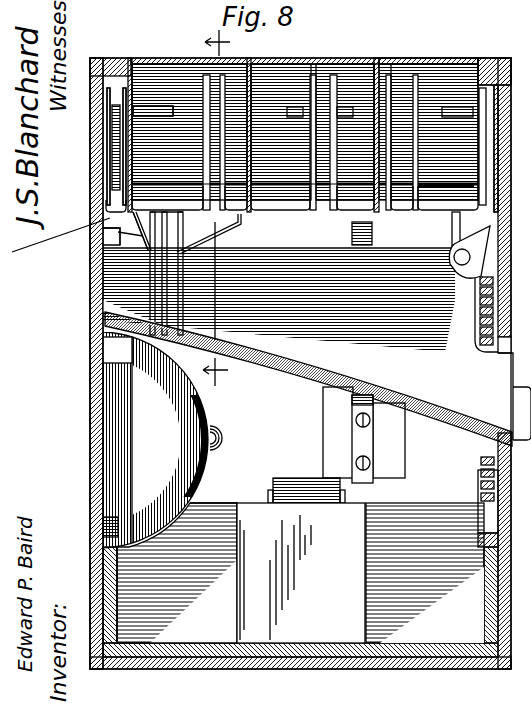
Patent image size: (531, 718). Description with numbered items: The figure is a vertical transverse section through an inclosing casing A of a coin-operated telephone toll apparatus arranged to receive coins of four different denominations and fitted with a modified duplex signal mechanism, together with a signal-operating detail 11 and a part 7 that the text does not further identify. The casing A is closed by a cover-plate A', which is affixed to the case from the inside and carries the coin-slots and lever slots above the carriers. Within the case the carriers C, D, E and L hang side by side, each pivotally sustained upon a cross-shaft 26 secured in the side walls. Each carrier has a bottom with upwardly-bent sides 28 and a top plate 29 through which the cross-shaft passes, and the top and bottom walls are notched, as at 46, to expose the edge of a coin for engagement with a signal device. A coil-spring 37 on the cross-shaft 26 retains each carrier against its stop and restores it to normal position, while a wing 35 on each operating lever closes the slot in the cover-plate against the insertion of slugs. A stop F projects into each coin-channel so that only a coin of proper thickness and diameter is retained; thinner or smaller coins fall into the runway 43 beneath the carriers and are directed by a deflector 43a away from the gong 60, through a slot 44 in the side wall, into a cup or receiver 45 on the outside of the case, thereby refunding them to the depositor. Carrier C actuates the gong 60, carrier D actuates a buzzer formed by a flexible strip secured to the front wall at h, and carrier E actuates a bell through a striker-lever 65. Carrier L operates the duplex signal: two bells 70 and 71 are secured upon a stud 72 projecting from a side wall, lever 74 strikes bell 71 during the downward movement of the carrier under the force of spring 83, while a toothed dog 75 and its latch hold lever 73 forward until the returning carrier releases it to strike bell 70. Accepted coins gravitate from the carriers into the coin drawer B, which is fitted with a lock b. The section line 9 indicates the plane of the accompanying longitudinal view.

The top plate 29 is at (305, 132).
The section line 9 9 is at (216, 205).
The runway 43 is at (308, 379).
The deflector 43a is at (469, 252).
The slot 44 is at (505, 347).
The cup or receiver 45 is at (519, 403).
The gong 60 is at (498, 468).
The securing point of flexible strip h is at (356, 461).
The bell 70 is at (104, 440).
The bell 71 is at (115, 410).
The stud 72 is at (224, 437).
The lock b is at (301, 573).
The coin receptacle or drawer B is at (425, 573).
The spring block 11 is at (352, 236).
The striker-lever 65 is at (243, 233).
The lever 73 is at (178, 229).
The cross-shaft 26 is at (445, 190).
The notch 46 is at (133, 115).
The carrier L is at (157, 135).
The carrier E is at (300, 110).
The carrier D is at (338, 107).
The cover-plate A' is at (428, 41).
The carrier C is at (430, 110).
The spring 83 is at (530, 42).
The dog 75 is at (120, 257).
The lever 74 is at (143, 236).
The arm 7 is at (110, 218).
The wing 35 is at (125, 205).
The coil-spring 37 is at (252, 198).
The upwardly-bent sides 28 is at (107, 150).
The stop F is at (107, 128).
The inclosing casing A is at (78, 363).